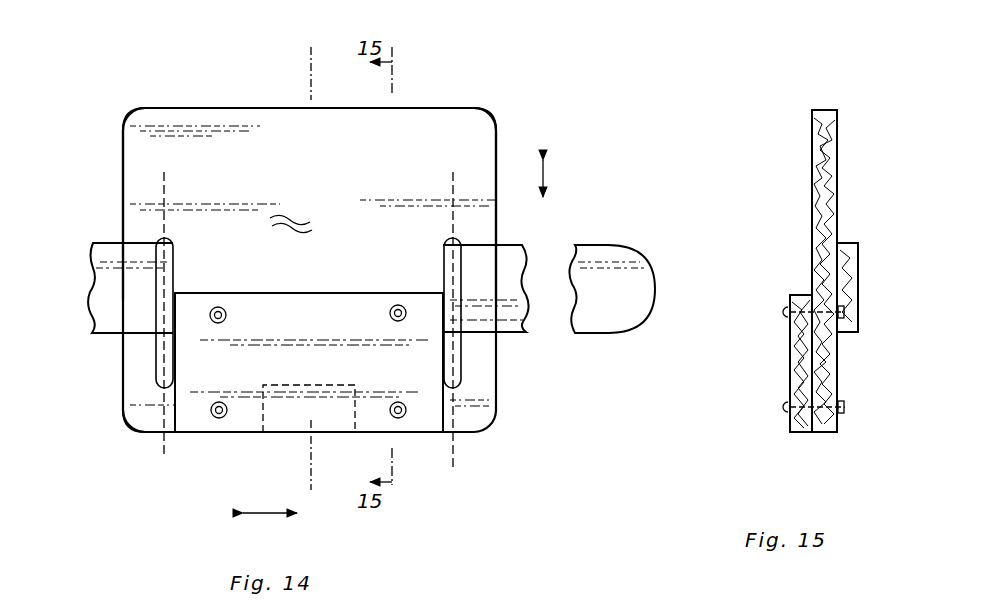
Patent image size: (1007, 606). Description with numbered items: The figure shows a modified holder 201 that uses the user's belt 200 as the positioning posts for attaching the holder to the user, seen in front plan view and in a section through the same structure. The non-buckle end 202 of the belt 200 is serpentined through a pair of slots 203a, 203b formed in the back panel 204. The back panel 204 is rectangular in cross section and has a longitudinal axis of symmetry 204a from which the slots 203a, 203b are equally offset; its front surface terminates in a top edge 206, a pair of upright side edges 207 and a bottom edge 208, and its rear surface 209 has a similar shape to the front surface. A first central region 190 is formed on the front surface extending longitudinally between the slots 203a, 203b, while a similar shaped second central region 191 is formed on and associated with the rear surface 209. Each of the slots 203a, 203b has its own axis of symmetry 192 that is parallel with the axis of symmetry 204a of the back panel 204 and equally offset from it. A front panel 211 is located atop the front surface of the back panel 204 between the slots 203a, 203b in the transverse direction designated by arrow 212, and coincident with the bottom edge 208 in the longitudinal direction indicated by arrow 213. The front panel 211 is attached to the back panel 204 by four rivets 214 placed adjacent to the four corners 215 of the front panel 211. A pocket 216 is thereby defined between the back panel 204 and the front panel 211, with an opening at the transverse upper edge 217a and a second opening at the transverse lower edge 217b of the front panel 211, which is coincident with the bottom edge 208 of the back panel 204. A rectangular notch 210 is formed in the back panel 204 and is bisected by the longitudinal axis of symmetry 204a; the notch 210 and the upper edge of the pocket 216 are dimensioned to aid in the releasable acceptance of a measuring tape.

In FIG. 14, the first central region 190 is at (300, 216).
In FIG. 15, the second central region 191 is at (841, 231).
In FIG. 14, the axis of symmetry 192 is at (165, 170).
In FIG. 14, the belt 200 is at (112, 228).
In FIG. 15, the belt 200 is at (864, 319).
In FIG. 14, the modified holder 201 is at (157, 68).
In FIG. 15, the modified holder 201 is at (798, 104).
In FIG. 14, the non-buckle end 202 is at (612, 246).
In FIG. 14, the slot 203a is at (168, 359).
In FIG. 14, the slot 203b is at (462, 372).
In FIG. 14, the back panel 204 is at (472, 101).
In FIG. 15, the back panel 204 is at (841, 118).
In FIG. 14, the longitudinal axis of symmetry 204a is at (310, 55).
In FIG. 14, the top edge 206 is at (258, 107).
In FIG. 14, the upright side edges 207 is at (123, 148).
In FIG. 14, the bottom edge 208 is at (242, 433).
In FIG. 15, the bottom edge 208 is at (830, 433).
In FIG. 14, the rear surface 209 is at (428, 128).
In FIG. 15, the rear surface 209 is at (837, 183).
In FIG. 14, the notch 210 is at (284, 432).
In FIG. 14, the front panel 211 is at (170, 425).
In FIG. 14, the arrow 212 is at (272, 515).
In FIG. 14, the arrow 213 is at (545, 178).
In FIG. 14, the rivets 214 is at (221, 402).
In FIG. 15, the rivets 214 is at (788, 314).
In FIG. 14, the corners 215 is at (178, 292).
In FIG. 15, the corners 215 is at (800, 295).
In FIG. 14, the pocket 216 is at (338, 289).
In FIG. 15, the pocket 216 is at (808, 288).
In FIG. 15, the transverse upper edge 217a is at (805, 295).
In FIG. 15, the transverse lower edge 217b is at (803, 433).